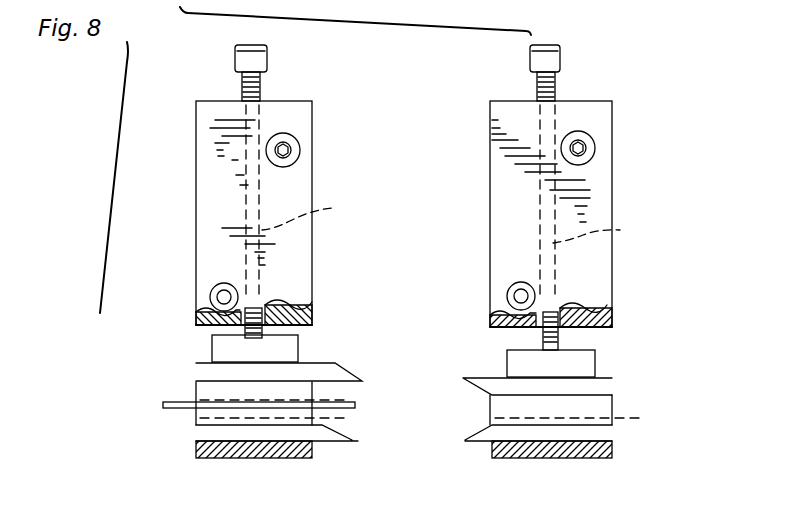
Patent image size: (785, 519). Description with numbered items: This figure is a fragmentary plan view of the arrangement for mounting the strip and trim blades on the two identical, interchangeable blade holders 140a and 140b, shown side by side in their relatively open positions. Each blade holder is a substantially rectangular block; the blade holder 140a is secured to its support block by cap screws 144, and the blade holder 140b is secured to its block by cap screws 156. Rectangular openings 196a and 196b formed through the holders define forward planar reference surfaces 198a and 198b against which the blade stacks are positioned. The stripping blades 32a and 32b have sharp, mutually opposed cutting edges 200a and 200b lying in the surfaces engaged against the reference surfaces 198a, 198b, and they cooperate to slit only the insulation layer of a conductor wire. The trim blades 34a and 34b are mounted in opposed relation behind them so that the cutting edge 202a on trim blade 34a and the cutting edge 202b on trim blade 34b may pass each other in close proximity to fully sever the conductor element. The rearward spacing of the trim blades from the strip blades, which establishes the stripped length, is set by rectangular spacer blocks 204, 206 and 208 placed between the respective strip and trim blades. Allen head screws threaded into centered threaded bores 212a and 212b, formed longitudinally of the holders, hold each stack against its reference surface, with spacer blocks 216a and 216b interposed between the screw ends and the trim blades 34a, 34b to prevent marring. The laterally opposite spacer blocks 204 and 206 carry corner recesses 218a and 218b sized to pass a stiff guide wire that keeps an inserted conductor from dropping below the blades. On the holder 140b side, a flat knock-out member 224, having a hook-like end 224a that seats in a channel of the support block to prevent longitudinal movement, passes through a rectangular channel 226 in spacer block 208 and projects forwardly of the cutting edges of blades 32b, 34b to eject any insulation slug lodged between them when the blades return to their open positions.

The blade holder 140b is at (196, 205).
The blade holder 140a is at (608, 200).
The cap screws 156 is at (300, 150).
The cap screws 144 is at (595, 148).
The threaded bore 212b is at (329, 215).
The threaded bore 212a is at (616, 243).
The rectangular opening 196b is at (198, 322).
The rectangular opening 196a is at (595, 332).
The spacer block 216b is at (215, 350).
The spacer block 216a is at (590, 366).
The spacer block 208 is at (210, 380).
The spacer block 204 is at (603, 400).
The trim blade 34b is at (323, 370).
The trim blade 34a is at (462, 380).
The cutting edge 202b is at (330, 378).
The cutting edge 202a is at (468, 382).
The rectangular channel 226 is at (355, 378).
The knock-out member 224 is at (355, 406).
The hook-like end 224a is at (165, 404).
The corner recess 218b is at (350, 432).
The corner recess 218a is at (586, 429).
The spacer block 206 is at (200, 413).
The reference surface 198b is at (198, 445).
The reference surface 198a is at (615, 440).
The cutting edge 200b is at (340, 447).
The cutting edge 200a is at (470, 443).
The stripping blade 32b is at (333, 448).
The stripping blade 32a is at (488, 442).